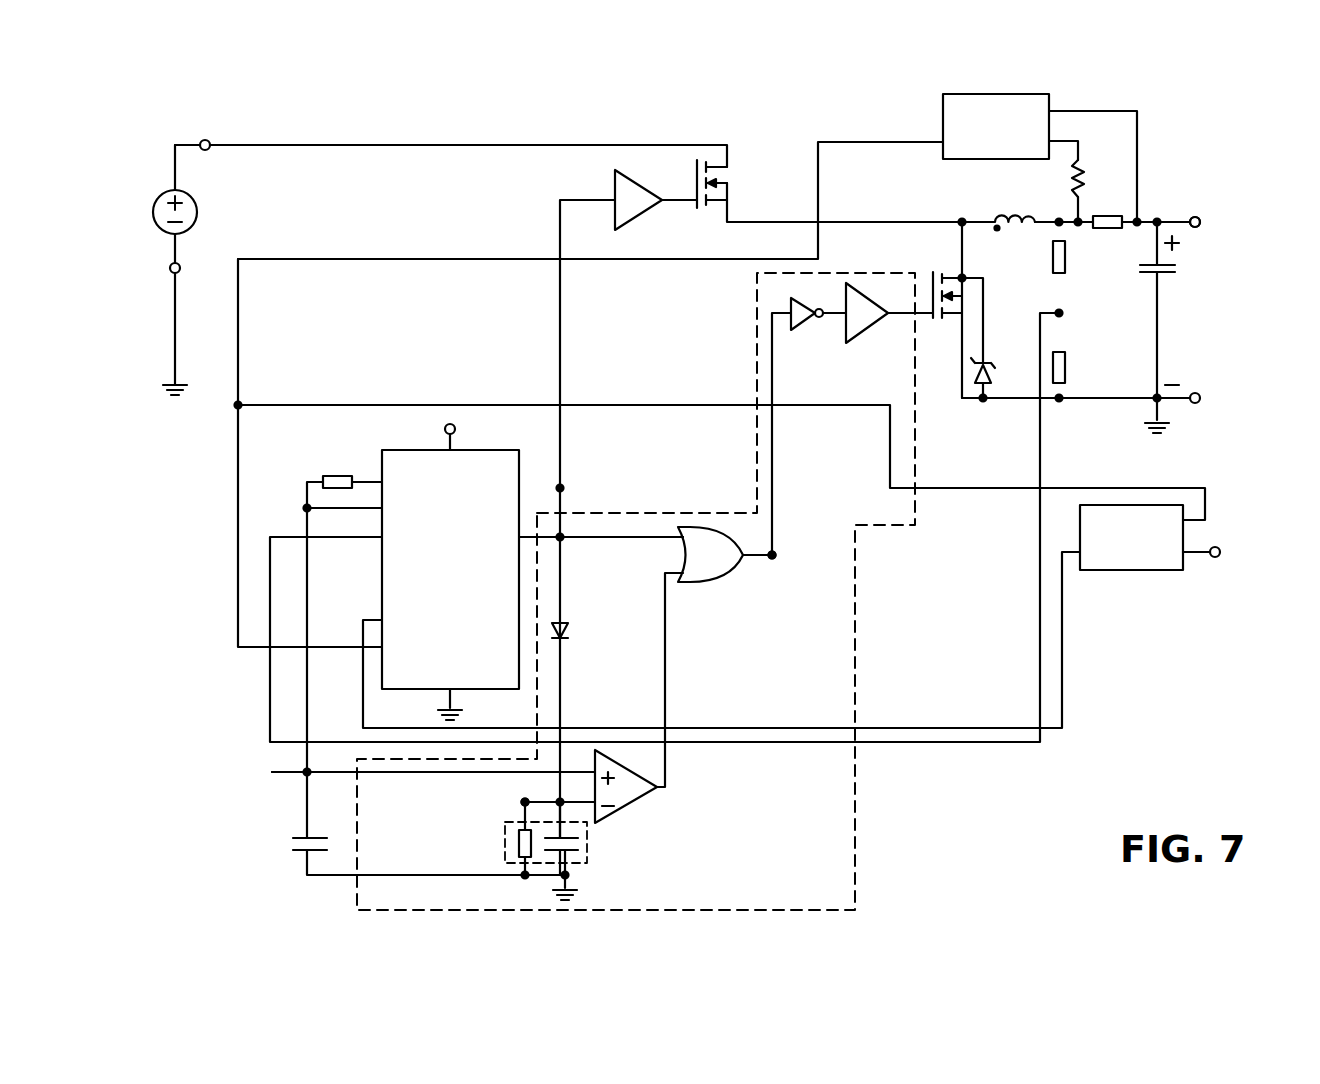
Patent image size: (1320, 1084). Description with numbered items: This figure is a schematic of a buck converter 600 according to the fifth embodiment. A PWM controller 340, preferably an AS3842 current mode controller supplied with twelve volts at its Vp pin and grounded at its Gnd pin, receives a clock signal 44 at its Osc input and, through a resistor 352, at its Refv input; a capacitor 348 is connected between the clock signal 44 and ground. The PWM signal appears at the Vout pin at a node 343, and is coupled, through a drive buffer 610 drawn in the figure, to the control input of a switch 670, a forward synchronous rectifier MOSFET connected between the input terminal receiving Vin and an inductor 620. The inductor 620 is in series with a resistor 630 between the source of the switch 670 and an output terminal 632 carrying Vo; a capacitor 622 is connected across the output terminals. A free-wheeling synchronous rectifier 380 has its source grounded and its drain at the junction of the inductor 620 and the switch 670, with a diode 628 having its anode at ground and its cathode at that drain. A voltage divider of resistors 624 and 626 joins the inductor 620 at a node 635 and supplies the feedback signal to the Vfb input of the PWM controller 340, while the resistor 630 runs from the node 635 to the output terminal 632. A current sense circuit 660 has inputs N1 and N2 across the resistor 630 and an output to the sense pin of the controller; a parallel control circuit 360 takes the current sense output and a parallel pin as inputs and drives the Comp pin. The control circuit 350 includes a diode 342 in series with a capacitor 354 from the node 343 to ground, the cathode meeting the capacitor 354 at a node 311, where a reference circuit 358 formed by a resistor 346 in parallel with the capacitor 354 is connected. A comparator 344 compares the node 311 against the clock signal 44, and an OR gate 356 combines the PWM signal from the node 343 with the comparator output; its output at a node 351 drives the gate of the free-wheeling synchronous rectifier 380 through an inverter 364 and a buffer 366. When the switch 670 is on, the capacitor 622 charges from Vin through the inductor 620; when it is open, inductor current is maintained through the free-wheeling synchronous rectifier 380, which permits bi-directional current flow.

The buck converter 600 is at (521, 122).
The switch 670 is at (694, 178).
The driver buffer 610 is at (622, 224).
The current sense circuit 660 is at (1049, 100).
The inductor 620 is at (1003, 216).
The node 635 is at (1076, 216).
The resistor 630 is at (1106, 214).
The output terminal 632 is at (1196, 216).
The free-wheeling synchronous rectifier 380 is at (948, 270).
The resistor 624 is at (1065, 248).
The resistor 626 is at (1065, 374).
The capacitor 622 is at (1165, 275).
The diode 628 is at (988, 360).
The inverter 364 is at (805, 332).
The buffer 366 is at (868, 335).
The resistor 352 is at (340, 474).
The PWM controller 340 is at (418, 690).
The node 343 is at (564, 540).
The diode 342 is at (566, 640).
The OR gate 356 is at (702, 585).
The node 351 is at (777, 558).
The parallel control circuit 360 is at (1185, 538).
The comparator 344 is at (648, 793).
The control circuit 350 is at (870, 790).
The node 311 is at (522, 801).
The reference circuit 358 is at (504, 840).
The resistor 346 is at (518, 848).
The capacitor 354 is at (586, 850).
The capacitor 348 is at (301, 850).
The clock signal 44 is at (290, 776).